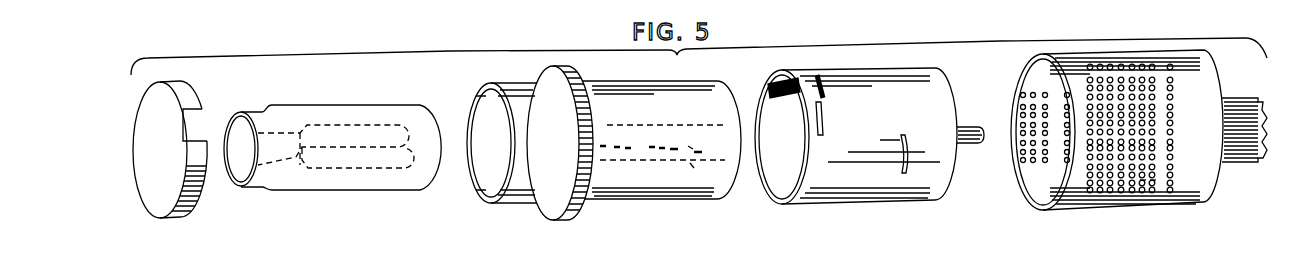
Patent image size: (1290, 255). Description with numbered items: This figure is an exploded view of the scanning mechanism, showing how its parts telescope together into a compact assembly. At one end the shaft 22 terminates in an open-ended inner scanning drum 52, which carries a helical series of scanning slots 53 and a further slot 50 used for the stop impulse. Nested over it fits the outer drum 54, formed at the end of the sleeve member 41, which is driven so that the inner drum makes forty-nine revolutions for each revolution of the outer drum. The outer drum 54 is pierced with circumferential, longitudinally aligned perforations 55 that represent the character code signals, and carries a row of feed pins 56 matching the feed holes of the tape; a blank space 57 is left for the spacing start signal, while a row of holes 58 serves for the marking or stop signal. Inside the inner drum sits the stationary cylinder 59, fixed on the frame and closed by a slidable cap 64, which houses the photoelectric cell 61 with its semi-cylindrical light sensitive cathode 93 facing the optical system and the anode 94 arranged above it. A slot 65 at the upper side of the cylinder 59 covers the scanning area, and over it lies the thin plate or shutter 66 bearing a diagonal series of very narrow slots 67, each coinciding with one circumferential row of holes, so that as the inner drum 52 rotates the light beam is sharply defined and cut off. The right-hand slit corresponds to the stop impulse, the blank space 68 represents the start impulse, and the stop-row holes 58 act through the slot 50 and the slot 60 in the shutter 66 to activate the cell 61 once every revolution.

The shaft 22 is at (973, 127).
The sleeve member 41 is at (1249, 163).
The slot 50 is at (907, 163).
The cylindrical or drum portion 52 is at (860, 149).
The slots 53 is at (783, 95).
The cylindrical or drum portion 54 is at (1112, 139).
The perforations or holes 55 is at (1085, 134).
The feed pins 56 is at (1123, 132).
The space 57 is at (1144, 205).
The row of holes 58 is at (1155, 204).
The cylinder 59 is at (637, 147).
The slot 60 is at (699, 153).
The photoelectric cell 61 is at (332, 163).
The cap 64 is at (167, 204).
The slot 65 is at (650, 130).
The plate or shutter 66 is at (690, 166).
The narrow slots 67 is at (676, 151).
The space 68 is at (808, 115).
The light sensitive cathode 93 is at (347, 168).
The anode 94 is at (338, 126).